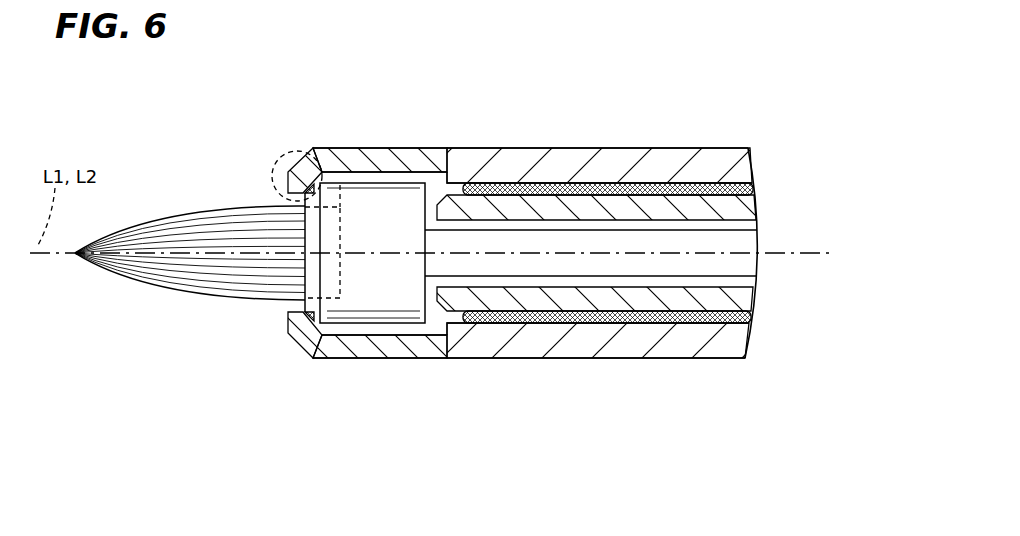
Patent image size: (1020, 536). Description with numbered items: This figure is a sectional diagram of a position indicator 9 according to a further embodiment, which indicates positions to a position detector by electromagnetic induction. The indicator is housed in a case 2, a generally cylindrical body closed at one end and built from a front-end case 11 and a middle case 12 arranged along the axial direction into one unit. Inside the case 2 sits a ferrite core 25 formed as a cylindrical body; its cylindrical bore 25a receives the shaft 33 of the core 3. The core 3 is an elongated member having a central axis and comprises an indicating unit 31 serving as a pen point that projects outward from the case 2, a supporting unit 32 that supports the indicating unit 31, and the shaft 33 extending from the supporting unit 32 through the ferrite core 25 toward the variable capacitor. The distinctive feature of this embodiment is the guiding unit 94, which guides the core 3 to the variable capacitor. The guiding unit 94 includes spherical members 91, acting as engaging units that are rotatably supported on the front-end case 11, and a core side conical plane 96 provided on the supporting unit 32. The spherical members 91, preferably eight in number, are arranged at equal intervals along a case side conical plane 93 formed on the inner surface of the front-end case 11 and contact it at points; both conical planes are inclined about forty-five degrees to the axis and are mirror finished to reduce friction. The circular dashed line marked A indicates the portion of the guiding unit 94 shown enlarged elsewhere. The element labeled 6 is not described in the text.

The case 2 is at (717, 141).
The core 3 is at (190, 311).
The insertion portion 6 is at (653, 148).
The position indicator 9 is at (597, 122).
The front-end case 11 is at (386, 148).
The middle case 12 is at (553, 148).
The ferrite core 25 is at (460, 186).
The cylindrical bore 25a is at (510, 221).
The indicating unit 31 is at (198, 222).
The supporting unit 32 is at (403, 312).
The shaft 33 is at (558, 265).
The spherical members 91 is at (310, 322).
The case side conical plane 93 is at (337, 148).
The guiding unit 94 is at (325, 327).
The core side conical plane 96 is at (305, 288).
The portion A is at (290, 151).